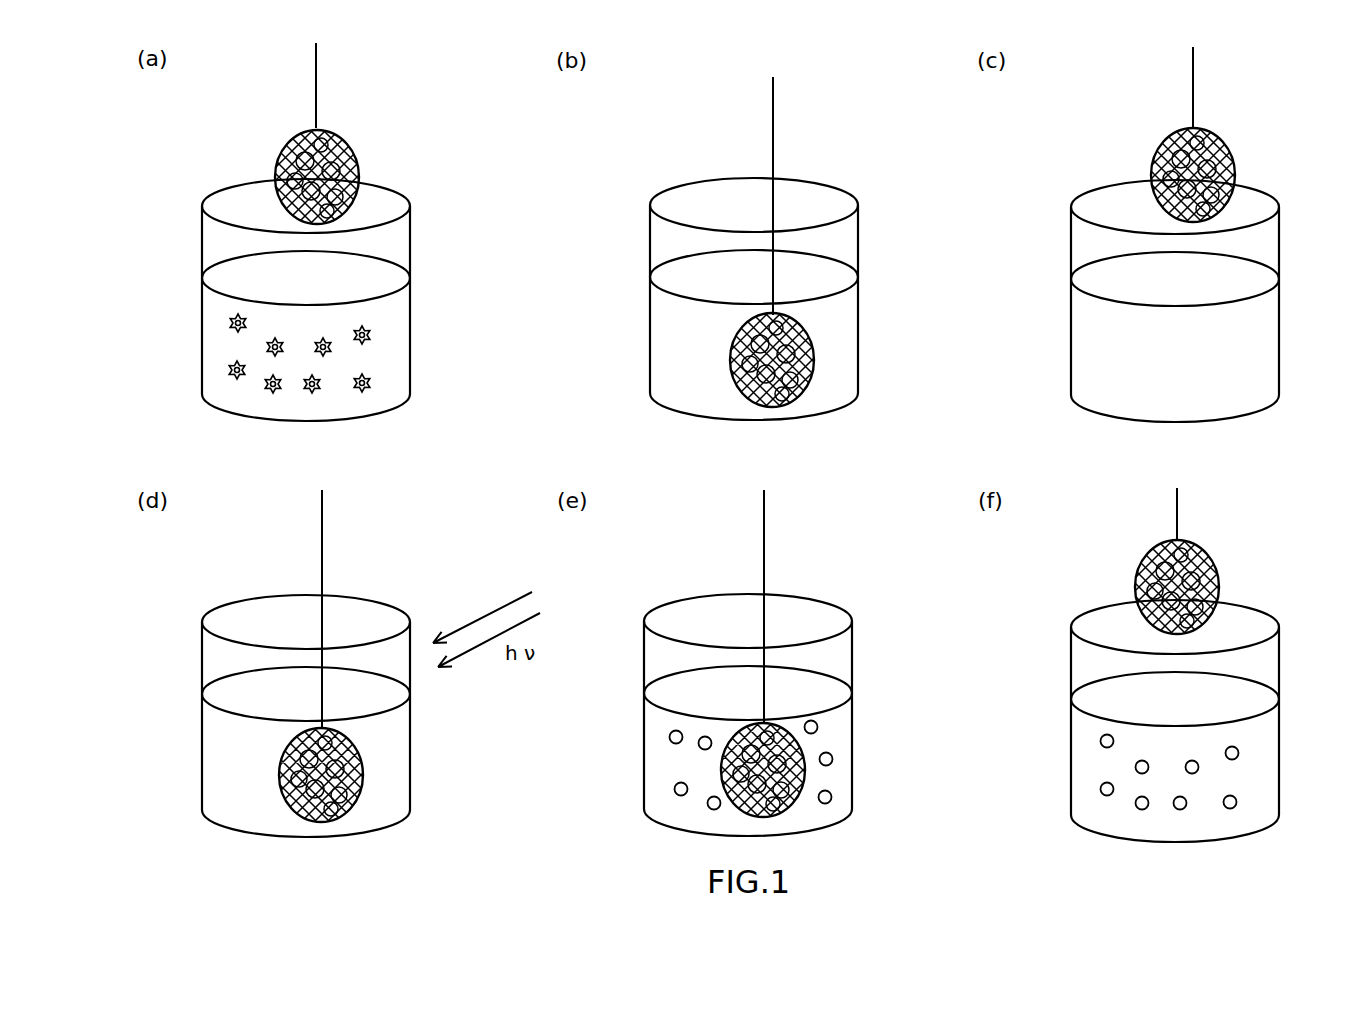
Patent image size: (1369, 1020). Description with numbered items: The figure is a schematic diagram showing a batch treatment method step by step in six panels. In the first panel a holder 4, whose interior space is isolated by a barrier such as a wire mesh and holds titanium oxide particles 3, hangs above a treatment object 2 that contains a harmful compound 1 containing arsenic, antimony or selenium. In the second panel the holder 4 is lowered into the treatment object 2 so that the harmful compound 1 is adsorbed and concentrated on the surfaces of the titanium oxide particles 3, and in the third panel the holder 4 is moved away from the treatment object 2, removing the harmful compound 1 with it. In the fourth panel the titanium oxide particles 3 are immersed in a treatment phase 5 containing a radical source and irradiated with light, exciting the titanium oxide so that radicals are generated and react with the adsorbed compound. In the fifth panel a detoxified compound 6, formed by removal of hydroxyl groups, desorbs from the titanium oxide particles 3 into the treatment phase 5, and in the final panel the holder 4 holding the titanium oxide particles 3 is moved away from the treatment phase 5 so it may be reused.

The harmful compound 1 is at (373, 380).
The treatment object 2 is at (392, 325).
The titanium oxide particles 3 is at (322, 130).
The holder 4 is at (359, 158).
The treatment phase 5 is at (387, 735).
The detoxified compound 6 is at (833, 760).